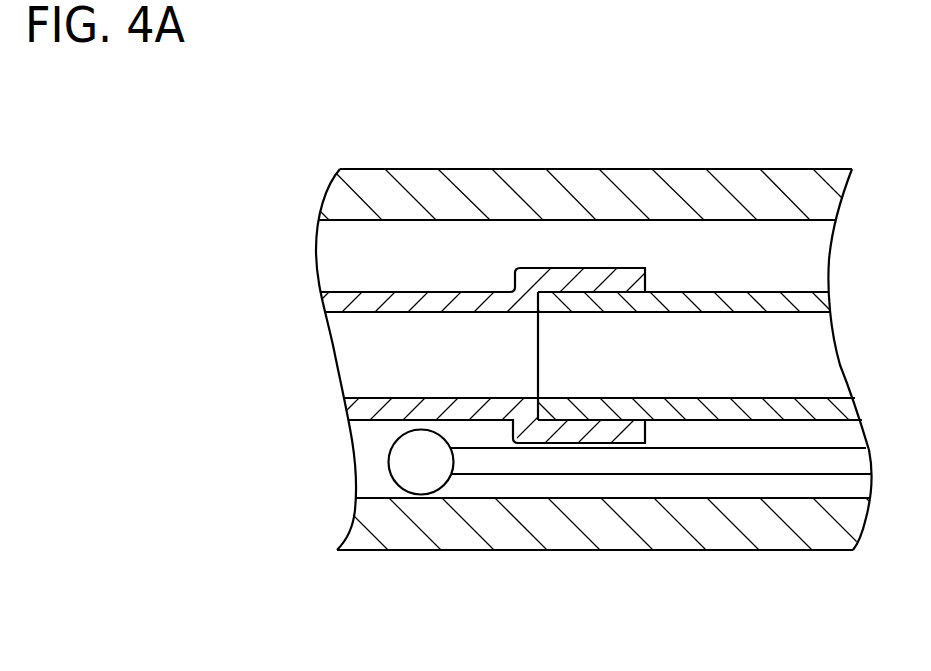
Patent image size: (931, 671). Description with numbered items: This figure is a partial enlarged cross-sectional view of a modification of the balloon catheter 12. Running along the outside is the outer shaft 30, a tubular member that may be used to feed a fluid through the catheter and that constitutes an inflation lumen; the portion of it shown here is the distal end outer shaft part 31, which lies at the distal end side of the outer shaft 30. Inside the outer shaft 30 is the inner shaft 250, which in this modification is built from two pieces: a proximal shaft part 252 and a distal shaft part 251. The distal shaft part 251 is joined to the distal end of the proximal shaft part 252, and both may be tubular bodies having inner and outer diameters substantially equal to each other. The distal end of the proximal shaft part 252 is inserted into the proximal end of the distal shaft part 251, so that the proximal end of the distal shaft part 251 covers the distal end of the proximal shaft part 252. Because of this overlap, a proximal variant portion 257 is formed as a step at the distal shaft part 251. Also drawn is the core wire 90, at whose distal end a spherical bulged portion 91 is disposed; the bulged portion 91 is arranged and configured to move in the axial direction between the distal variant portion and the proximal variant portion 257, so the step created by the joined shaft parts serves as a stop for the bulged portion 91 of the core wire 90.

The balloon catheter 12 is at (620, 82).
The outer shaft 30 is at (797, 169).
The distal end outer shaft part 31 is at (800, 550).
The inner shaft 250 is at (726, 292).
The distal shaft part 251 is at (381, 292).
The proximal shaft part 252 is at (720, 420).
The proximal variant portion 257 is at (528, 423).
The core wire 90 is at (606, 465).
The bulged portion 91 is at (410, 478).